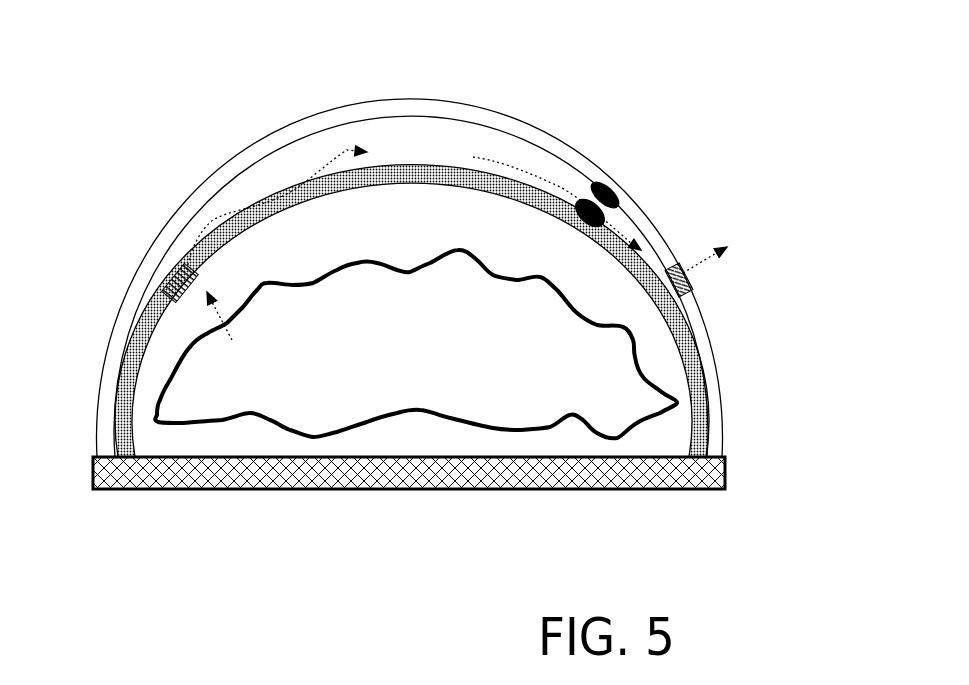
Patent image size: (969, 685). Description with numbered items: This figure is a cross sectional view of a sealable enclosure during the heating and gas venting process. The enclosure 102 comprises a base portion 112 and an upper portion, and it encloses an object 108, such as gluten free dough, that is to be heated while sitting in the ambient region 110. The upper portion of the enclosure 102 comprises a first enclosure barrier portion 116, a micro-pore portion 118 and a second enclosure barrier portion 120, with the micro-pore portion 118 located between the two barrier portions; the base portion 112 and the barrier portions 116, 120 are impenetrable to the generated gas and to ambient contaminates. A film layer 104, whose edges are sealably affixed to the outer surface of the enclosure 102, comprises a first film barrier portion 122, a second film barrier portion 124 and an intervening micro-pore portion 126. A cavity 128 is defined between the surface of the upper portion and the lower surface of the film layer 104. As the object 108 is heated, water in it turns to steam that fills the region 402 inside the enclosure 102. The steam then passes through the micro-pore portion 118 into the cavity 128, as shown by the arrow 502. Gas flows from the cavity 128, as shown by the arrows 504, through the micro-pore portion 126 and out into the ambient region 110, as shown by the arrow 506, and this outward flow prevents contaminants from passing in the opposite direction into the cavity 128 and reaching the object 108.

The enclosure 102 is at (383, 532).
The film layer 104 is at (740, 98).
The object 108 is at (422, 366).
The ambient region 110 is at (173, 109).
The base portion 112 is at (212, 475).
The first enclosure barrier portion 116 is at (345, 190).
The micro-pore portion 118 is at (183, 278).
The second enclosure barrier portion 120 is at (157, 310).
The first film barrier portion 122 is at (590, 162).
The second film barrier portion 124 is at (707, 392).
The micro-pore portion 126 is at (690, 288).
The cavity 128 is at (407, 138).
The region 402 is at (440, 222).
The arrow 502 is at (230, 292).
The arrows 504 is at (270, 186).
The arrow 506 is at (696, 245).